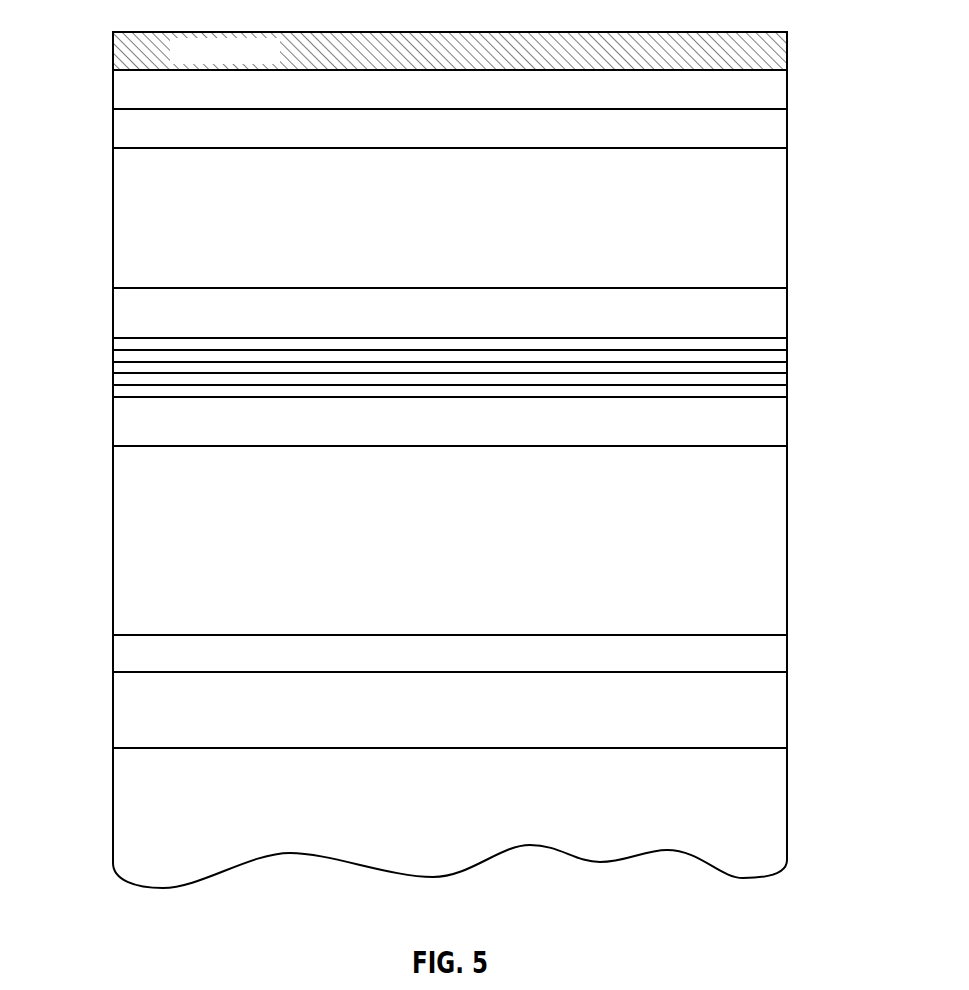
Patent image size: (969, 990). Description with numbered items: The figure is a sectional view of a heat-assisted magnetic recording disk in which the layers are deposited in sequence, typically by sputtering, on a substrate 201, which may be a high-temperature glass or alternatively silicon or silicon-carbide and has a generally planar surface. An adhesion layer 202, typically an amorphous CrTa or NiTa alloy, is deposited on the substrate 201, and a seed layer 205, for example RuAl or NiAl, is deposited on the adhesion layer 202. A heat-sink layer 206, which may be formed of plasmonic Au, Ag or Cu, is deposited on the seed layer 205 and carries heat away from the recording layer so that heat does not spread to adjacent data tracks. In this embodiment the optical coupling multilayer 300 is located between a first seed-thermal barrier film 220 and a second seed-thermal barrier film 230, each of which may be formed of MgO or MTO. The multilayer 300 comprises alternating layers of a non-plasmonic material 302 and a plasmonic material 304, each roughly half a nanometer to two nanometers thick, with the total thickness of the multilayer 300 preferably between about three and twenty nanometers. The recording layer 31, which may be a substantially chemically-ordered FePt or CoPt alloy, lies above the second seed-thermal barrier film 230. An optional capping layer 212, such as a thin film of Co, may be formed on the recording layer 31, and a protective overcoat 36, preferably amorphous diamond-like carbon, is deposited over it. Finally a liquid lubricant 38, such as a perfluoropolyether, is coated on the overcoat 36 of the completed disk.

The lubricant 38 is at (110, 53).
The protective overcoat 36 is at (110, 90).
The capping layer 212 is at (110, 130).
The recording layer 31 is at (110, 215).
The second seed-thermal barrier film 230 is at (110, 303).
The optical coupling multilayer 300 is at (110, 338).
The non-plasmonic material layer 302 is at (788, 344).
The plasmonic material layer 304 is at (788, 356).
The first seed-thermal barrier film 220 is at (110, 420).
The heat-sink layer 206 is at (110, 542).
The seed layer 205 is at (110, 655).
The adhesion layer 202 is at (110, 708).
The substrate 201 is at (110, 805).